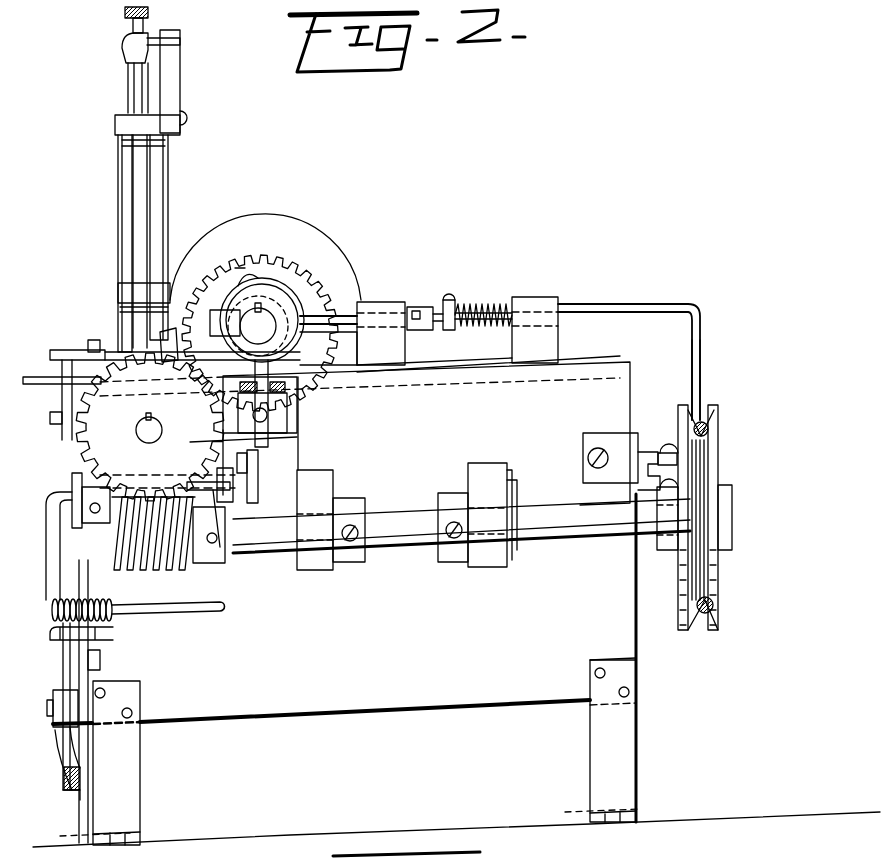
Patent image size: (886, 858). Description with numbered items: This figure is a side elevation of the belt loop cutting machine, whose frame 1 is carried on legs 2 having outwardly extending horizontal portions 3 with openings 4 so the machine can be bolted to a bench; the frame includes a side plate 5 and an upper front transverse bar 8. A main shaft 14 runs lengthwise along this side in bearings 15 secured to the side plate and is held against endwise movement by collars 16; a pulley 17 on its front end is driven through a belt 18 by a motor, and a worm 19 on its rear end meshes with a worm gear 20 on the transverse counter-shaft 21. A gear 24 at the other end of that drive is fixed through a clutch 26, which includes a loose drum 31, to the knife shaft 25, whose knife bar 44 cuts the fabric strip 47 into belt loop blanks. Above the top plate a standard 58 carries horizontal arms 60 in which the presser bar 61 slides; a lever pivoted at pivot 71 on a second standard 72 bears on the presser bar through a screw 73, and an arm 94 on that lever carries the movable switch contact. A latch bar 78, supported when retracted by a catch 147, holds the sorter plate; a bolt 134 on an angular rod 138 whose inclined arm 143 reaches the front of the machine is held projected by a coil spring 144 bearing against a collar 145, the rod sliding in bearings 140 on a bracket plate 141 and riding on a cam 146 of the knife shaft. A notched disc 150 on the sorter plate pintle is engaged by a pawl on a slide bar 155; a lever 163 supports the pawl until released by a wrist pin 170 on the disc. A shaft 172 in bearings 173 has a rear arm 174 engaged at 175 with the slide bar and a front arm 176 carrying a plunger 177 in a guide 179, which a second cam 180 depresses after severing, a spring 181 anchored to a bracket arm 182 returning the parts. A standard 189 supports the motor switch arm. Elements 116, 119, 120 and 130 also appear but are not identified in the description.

The frame 1 is at (640, 393).
The legs 2 is at (140, 773).
The outwardly extending horizontal portions 3 is at (137, 830).
The openings 4 is at (339, 824).
The side plate 5 is at (628, 641).
The upper front transverse bar 8 is at (582, 437).
The main shaft 14 is at (600, 532).
The bearings 15 is at (322, 570).
The collars 16 is at (355, 570).
The pulley 17 is at (724, 572).
The belt 18 is at (705, 612).
The worm 19 is at (198, 577).
The worm gear 20 is at (290, 438).
The counter-shaft 21 is at (152, 440).
The spur gear 24 is at (300, 235).
The knife shaft 25 is at (253, 337).
The clutch 26 is at (328, 238).
The drum 31 is at (262, 240).
The knife bar 44 is at (245, 268).
The fabric strip 47 is at (33, 377).
The standard 58 is at (124, 215).
The horizontal arms 60 is at (118, 128).
The presser bar 61 is at (128, 86).
The pivot 71 is at (182, 43).
The standard 72 is at (176, 92).
The screw 73 is at (128, 17).
The latch bar 78 is at (710, 422).
The arm 94 is at (143, 187).
The pawl 116 is at (90, 350).
The rod 119 is at (62, 404).
The stop 120 is at (53, 425).
The rod 130 is at (626, 304).
The bolt 134 is at (655, 447).
The angular rod 138 is at (711, 309).
The bearings 140 is at (380, 302).
The bracket plate 141 is at (470, 355).
The inclined arm 143 is at (702, 380).
The coil spring 144 is at (490, 304).
The collar 145 is at (447, 333).
The cam 146 is at (266, 287).
The catch 147 is at (692, 478).
The disc 150 is at (65, 809).
The slide bar 155 is at (95, 655).
The lever 163 is at (67, 678).
The wrist pin 170 is at (78, 805).
The shaft 172 is at (240, 545).
The bearings 173 is at (72, 480).
The arm 174 is at (50, 588).
The engagement point 175 is at (108, 636).
The arm 176 is at (290, 486).
The plunger 177 is at (286, 396).
The guide 179 is at (287, 417).
The cam 180 is at (292, 340).
The spring 181 is at (60, 701).
The bracket arm 182 is at (203, 617).
The standard 189 is at (158, 375).